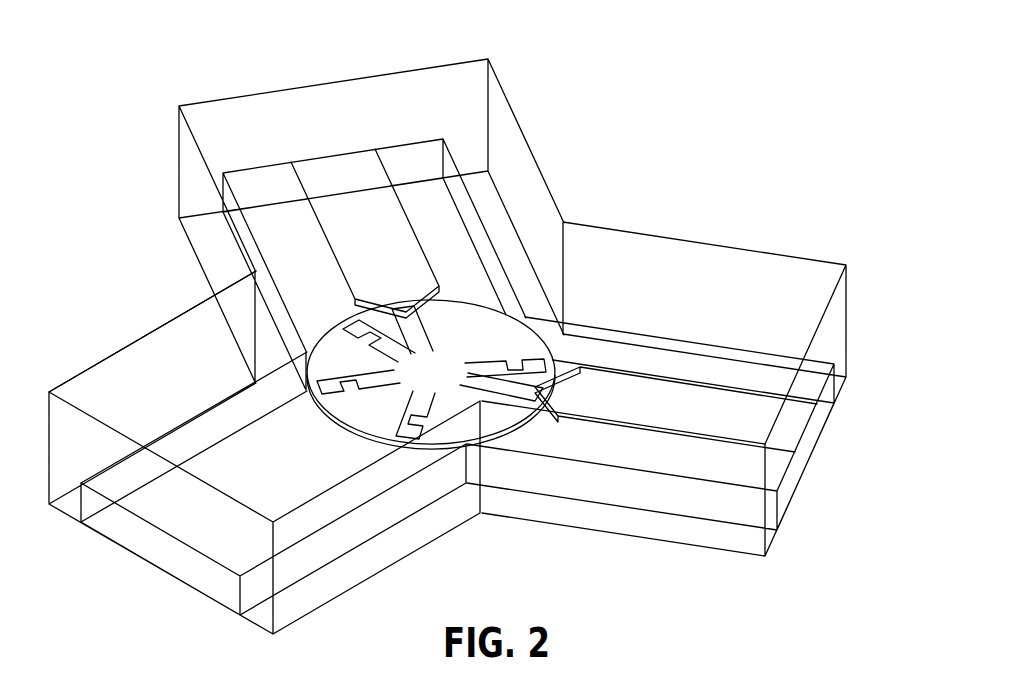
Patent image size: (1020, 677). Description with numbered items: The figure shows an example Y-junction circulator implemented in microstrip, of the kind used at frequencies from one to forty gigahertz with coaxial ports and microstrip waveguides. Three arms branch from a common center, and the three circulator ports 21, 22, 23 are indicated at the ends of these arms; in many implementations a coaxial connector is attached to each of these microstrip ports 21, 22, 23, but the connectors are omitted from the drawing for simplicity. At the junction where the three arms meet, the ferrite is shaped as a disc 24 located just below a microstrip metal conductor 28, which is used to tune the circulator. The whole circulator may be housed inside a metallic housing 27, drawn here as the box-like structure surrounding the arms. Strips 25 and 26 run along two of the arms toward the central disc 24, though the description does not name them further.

The circulator port 21 is at (105, 556).
The circulator port 22 is at (845, 424).
The circulator port 23 is at (310, 64).
The ferrite disc 24 is at (444, 303).
The second guide rail 25 is at (637, 390).
The third guide rail 26 is at (430, 197).
The metallic housing 27 is at (148, 317).
The microstrip metal conductor 28 is at (480, 334).